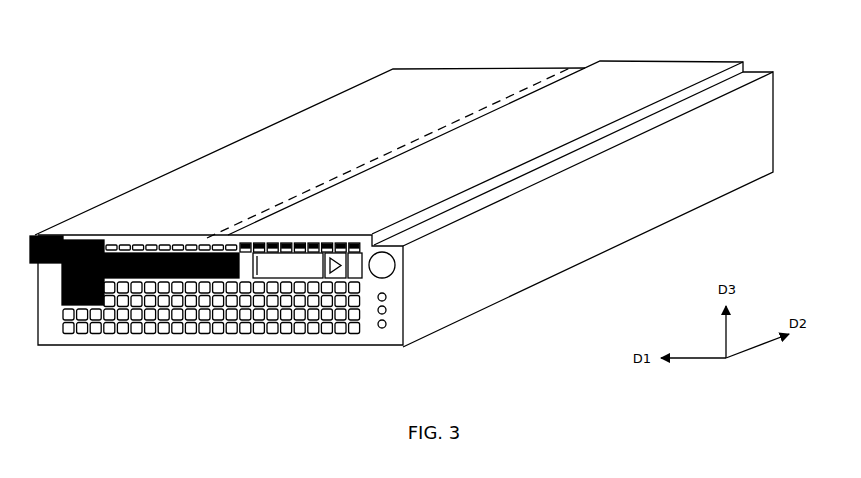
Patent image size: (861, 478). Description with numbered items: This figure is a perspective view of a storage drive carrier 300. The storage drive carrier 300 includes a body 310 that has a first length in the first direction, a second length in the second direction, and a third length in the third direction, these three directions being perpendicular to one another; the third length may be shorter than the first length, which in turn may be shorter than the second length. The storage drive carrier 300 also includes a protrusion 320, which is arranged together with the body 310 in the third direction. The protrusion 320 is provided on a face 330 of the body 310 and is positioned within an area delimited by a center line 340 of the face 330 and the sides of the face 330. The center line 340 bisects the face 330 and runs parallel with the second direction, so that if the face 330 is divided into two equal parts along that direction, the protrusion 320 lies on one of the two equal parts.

The storage drive carrier 300 is at (430, 185).
The body 310 is at (765, 133).
The protrusion 320 is at (745, 67).
The face 330 is at (383, 102).
The center line 340 is at (540, 80).